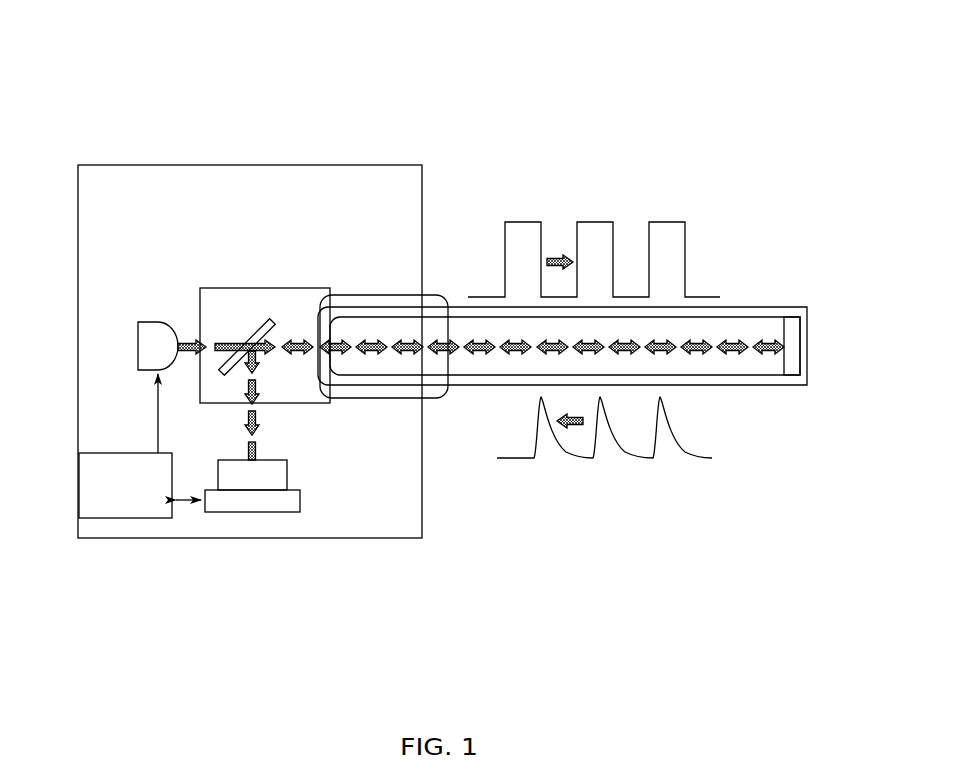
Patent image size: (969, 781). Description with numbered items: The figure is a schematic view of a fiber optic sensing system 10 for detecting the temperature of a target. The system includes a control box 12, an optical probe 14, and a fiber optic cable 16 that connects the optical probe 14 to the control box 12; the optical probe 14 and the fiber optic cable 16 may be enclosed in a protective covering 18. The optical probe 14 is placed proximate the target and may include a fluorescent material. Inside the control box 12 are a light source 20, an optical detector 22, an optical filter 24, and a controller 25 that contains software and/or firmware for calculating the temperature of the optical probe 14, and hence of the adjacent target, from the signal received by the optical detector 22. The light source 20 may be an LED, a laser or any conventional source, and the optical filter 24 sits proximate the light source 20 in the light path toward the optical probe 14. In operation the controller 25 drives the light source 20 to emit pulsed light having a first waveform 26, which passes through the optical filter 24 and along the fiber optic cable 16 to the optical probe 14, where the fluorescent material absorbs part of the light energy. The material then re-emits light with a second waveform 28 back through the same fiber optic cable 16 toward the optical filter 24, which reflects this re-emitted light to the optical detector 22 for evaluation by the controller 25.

The fiber optic sensing system 10 is at (575, 74).
The control box 12 is at (247, 165).
The optical probe 14 is at (798, 347).
The fiber optic cable 16 is at (742, 326).
The protective covering 18 is at (743, 388).
The light source 20 is at (138, 347).
The optical detector 22 is at (256, 516).
The optical filter 24 is at (238, 331).
The controller 25 is at (140, 519).
The first waveform 26 is at (598, 216).
The second waveform 28 is at (633, 481).